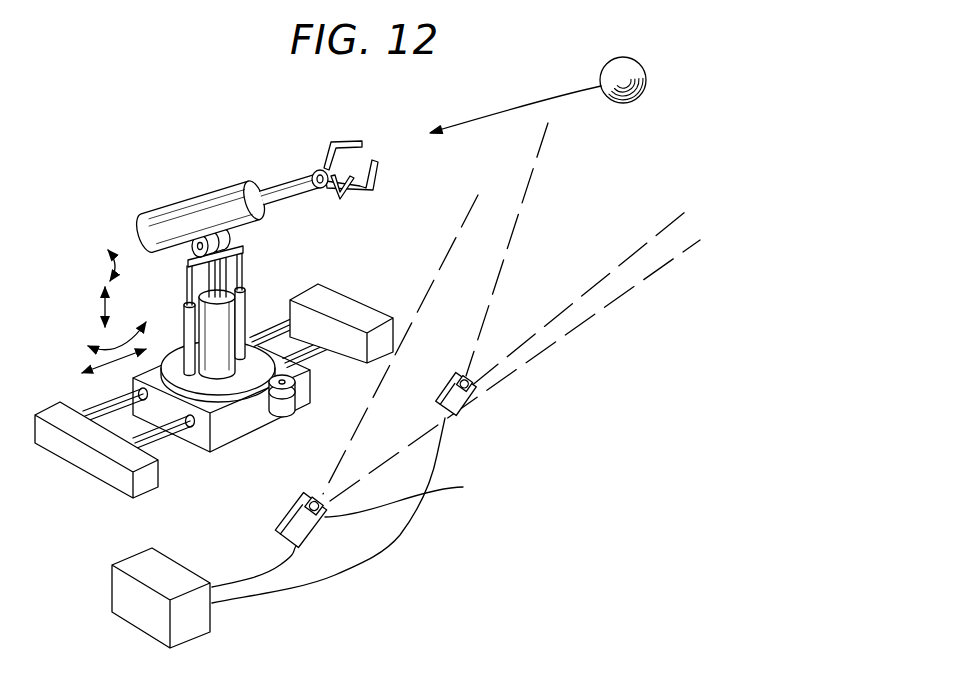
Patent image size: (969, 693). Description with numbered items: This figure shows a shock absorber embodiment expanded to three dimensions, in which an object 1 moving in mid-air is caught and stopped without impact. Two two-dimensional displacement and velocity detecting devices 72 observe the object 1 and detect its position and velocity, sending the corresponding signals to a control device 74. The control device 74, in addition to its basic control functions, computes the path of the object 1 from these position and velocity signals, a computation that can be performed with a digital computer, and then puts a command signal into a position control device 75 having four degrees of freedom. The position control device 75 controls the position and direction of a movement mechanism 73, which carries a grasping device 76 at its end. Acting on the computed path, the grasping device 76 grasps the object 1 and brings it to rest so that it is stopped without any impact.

The object 1 is at (622, 57).
The two-dimensional displacement and velocity detecting device 72 is at (457, 416).
The movement mechanism 73 is at (190, 203).
The control device 74 is at (212, 617).
The position control device 75 is at (178, 279).
The grasping device 76 is at (361, 140).